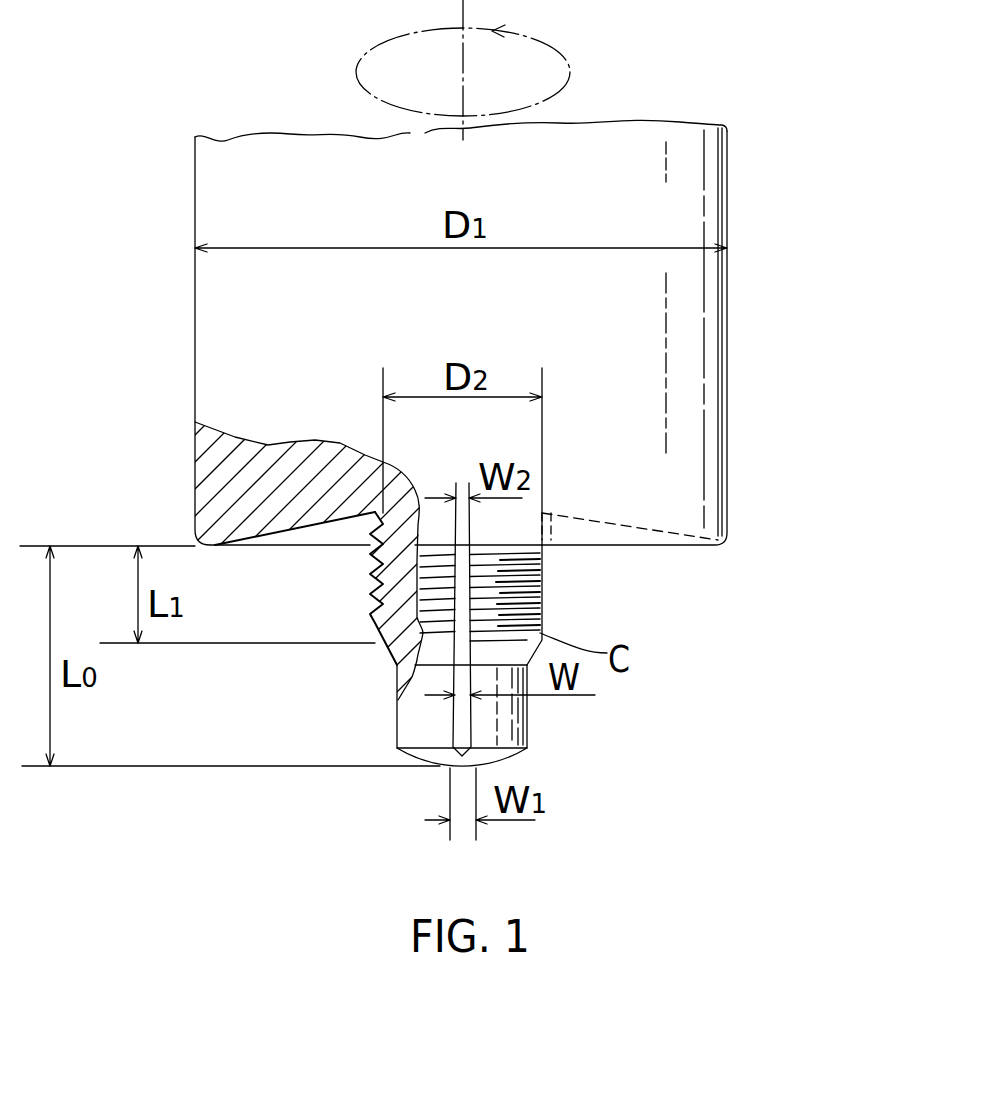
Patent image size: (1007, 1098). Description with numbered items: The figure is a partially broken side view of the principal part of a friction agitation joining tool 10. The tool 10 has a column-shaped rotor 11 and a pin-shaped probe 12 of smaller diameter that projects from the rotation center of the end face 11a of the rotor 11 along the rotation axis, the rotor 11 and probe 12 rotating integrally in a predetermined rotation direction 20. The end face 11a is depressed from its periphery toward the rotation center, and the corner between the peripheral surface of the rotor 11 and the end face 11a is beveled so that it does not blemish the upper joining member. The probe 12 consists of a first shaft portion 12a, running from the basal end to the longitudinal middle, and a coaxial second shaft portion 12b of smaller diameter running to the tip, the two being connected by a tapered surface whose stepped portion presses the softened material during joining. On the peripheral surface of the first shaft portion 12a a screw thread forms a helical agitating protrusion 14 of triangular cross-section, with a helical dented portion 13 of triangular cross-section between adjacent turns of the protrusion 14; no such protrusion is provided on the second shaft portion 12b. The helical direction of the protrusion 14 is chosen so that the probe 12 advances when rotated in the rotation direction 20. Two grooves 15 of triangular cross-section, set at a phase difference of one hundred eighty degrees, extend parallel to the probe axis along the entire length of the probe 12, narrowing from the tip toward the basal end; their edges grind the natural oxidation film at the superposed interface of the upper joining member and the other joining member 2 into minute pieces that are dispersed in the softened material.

The friction agitation joining tool 10 is at (412, 389).
The rotor 11 is at (708, 328).
The end face of the rotor 11a is at (687, 545).
The probe 12 is at (527, 624).
The first shaft portion 12a is at (540, 603).
The second shaft portion 12b is at (515, 713).
The dented portion 13 is at (377, 595).
The agitating protrusion 14 is at (372, 570).
The groove 15 is at (462, 718).
The rotation direction 20 is at (572, 72).
The joining member 2 is at (313, 548).